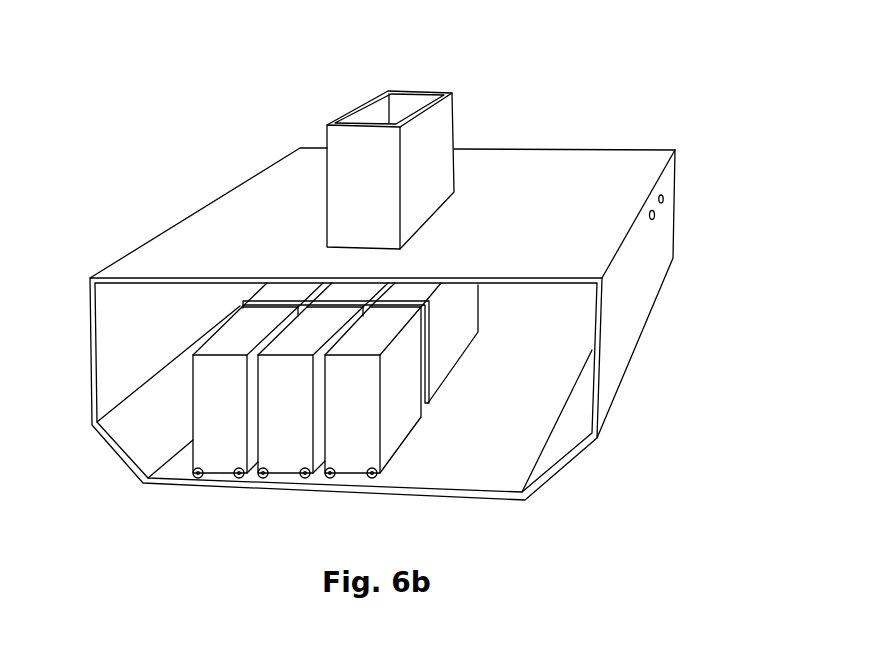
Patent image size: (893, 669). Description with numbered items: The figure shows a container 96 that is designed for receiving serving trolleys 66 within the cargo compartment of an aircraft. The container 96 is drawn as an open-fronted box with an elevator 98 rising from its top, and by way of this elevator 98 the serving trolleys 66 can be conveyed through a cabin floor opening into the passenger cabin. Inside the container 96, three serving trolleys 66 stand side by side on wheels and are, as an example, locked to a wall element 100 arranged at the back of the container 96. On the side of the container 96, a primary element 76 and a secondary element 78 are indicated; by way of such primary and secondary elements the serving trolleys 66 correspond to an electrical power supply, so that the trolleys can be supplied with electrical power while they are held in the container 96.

The container 96 is at (558, 104).
The elevator 98 is at (405, 106).
The secondary element 78 is at (664, 201).
The primary element 76 is at (652, 221).
The wall element 100 is at (243, 305).
The serving trolleys 66 is at (350, 391).